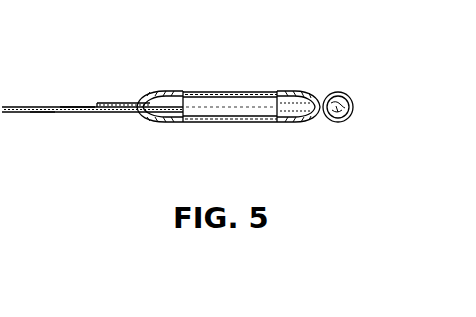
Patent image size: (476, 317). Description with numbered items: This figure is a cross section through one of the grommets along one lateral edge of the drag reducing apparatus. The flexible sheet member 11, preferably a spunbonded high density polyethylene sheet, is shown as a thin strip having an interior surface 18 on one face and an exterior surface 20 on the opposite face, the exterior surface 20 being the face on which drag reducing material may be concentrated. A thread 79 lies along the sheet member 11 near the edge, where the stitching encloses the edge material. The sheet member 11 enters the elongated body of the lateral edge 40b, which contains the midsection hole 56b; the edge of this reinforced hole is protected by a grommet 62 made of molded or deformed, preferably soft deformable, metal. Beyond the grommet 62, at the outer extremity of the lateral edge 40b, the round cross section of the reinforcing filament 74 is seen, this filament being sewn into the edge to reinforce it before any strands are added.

The flexible sheet member 11 is at (26, 107).
The interior surface 18 is at (71, 98).
The exterior surface 20 is at (42, 120).
The thread 79 is at (105, 103).
The midsection hole 56b is at (222, 82).
The grommet 62 is at (250, 91).
The lateral edge 40b is at (299, 70).
The reinforcing filament 74 is at (344, 119).